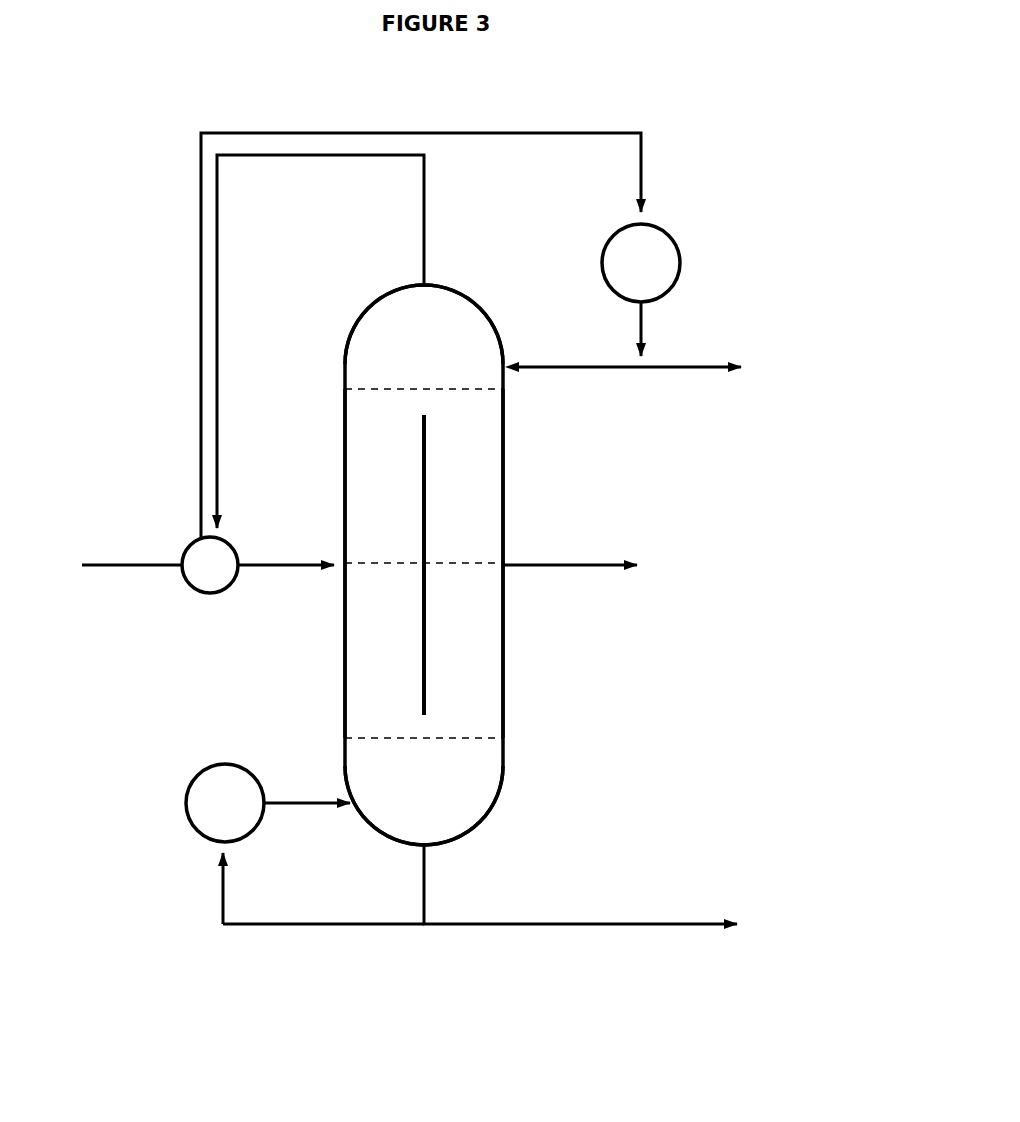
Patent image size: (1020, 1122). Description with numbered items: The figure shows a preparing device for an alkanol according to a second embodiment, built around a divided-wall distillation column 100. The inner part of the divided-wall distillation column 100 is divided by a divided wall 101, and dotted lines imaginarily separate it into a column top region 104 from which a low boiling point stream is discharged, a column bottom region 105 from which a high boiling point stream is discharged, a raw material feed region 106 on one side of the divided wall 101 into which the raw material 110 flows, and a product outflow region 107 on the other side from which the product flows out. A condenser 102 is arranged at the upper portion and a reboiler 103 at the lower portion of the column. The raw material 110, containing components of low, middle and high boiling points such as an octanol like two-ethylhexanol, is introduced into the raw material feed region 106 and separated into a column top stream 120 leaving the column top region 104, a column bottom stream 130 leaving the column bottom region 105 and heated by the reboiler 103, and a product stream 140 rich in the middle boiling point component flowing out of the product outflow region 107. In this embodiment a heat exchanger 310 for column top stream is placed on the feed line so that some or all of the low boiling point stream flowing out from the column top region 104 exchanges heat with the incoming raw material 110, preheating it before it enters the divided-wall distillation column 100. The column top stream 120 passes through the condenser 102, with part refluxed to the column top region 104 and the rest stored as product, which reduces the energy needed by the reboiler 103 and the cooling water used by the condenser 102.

The divided-wall distillation column 100 is at (366, 292).
The divided wall 101 is at (424, 460).
The condenser 102 is at (680, 262).
The reboiler 103 is at (188, 800).
The column top region 104 is at (372, 328).
The column bottom region 105 is at (475, 800).
The raw material feed region 106 is at (360, 635).
The product outflow region 107 is at (490, 653).
The raw material 110 is at (100, 558).
The column top stream 120 is at (424, 183).
The column bottom stream 130 is at (424, 890).
The product stream 140 is at (593, 563).
The heat exchanger for column top stream 310 is at (190, 543).